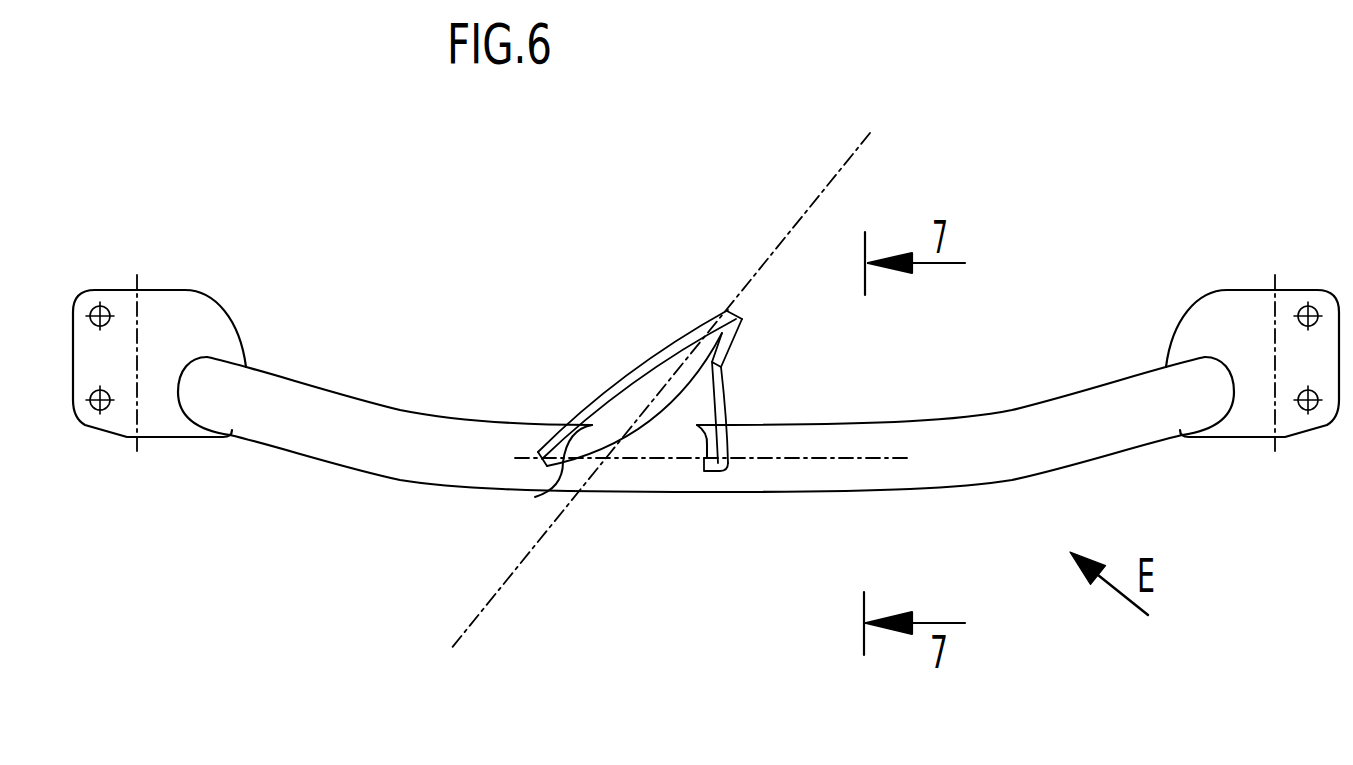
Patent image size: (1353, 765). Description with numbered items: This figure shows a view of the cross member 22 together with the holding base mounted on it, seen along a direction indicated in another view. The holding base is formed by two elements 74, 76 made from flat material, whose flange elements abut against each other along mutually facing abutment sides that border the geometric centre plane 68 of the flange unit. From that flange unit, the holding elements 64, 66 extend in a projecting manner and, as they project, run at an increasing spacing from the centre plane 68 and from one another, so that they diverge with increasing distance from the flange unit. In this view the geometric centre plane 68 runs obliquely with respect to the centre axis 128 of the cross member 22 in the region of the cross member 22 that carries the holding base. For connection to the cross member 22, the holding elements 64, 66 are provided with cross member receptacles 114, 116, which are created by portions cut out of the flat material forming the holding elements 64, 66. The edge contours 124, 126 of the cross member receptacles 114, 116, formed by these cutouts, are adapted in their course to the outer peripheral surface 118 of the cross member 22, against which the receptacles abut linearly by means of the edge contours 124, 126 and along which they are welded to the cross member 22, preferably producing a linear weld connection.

The cross member 22 is at (990, 432).
The holding element 64 is at (618, 398).
The holding element 66 is at (700, 399).
The geometric centre plane 68 is at (842, 168).
The element made from flat material 74 is at (690, 308).
The element made from flat material 76 is at (748, 357).
The cross member receptacle 114 is at (598, 448).
The cross member receptacle 116 is at (683, 446).
The outer peripheral surface 118 is at (815, 492).
The edge contour 124 is at (535, 497).
The edge contour 126 is at (707, 458).
The centre axis 128 is at (860, 457).